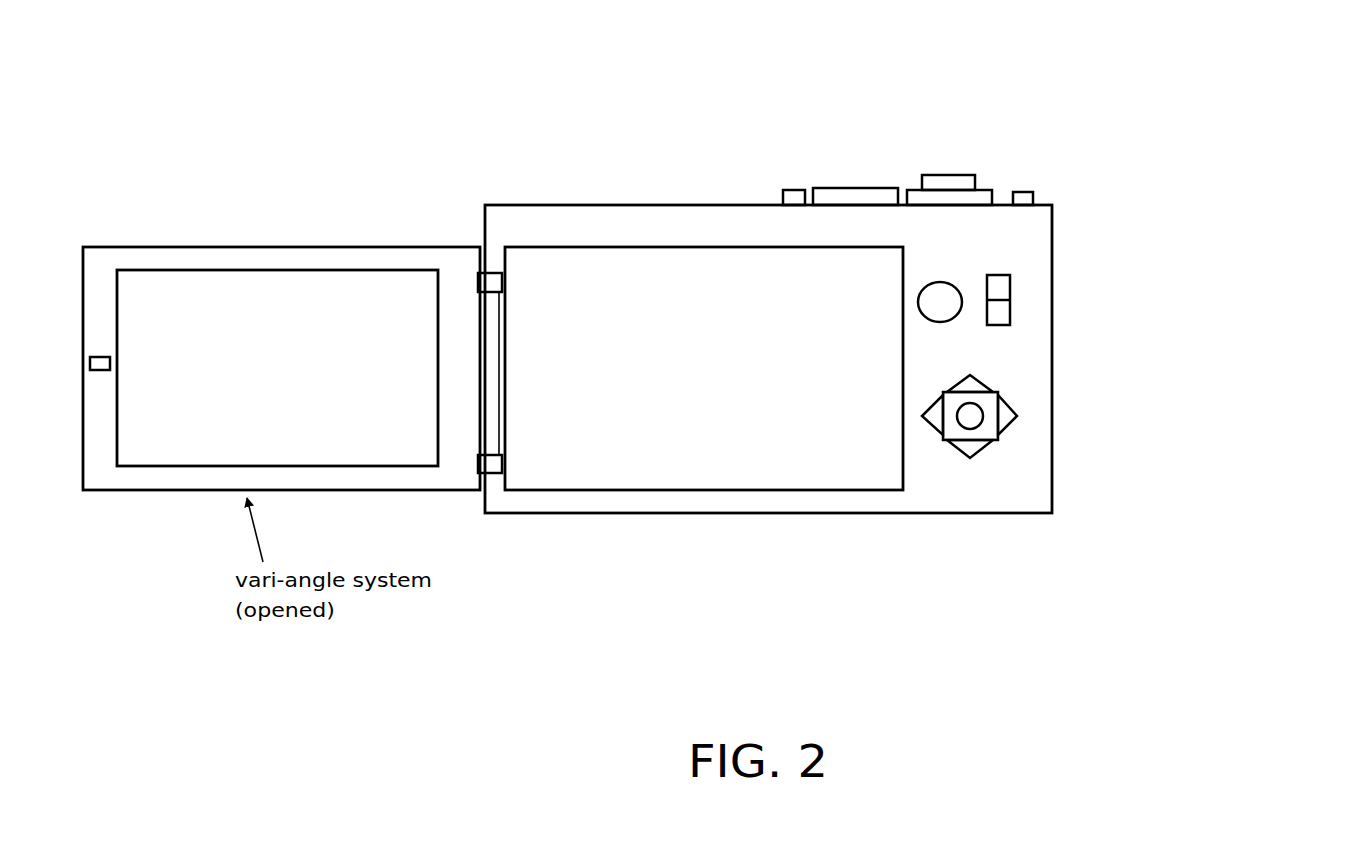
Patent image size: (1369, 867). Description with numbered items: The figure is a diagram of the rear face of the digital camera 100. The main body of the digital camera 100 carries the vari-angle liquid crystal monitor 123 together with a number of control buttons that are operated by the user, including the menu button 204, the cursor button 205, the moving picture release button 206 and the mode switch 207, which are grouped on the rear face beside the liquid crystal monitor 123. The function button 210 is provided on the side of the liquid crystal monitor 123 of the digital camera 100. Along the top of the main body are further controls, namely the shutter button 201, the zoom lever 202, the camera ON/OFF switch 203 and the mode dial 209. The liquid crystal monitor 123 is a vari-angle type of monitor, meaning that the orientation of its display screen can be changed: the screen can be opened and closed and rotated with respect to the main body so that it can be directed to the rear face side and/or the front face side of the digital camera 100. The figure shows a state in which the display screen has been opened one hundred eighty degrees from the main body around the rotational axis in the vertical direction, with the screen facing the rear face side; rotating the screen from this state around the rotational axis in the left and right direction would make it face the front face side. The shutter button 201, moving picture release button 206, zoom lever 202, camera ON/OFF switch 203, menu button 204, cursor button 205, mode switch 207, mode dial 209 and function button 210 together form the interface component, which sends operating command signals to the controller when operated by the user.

The digital camera 100 is at (563, 138).
The liquid crystal monitor 123 is at (387, 428).
The shutter button 201 is at (943, 175).
The zoom lever 202 is at (975, 203).
The camera ON/OFF switch 203 is at (793, 188).
The menu button 204 is at (970, 416).
The cursor button 205 is at (970, 450).
The moving picture release button 206 is at (940, 302).
The mode switch 207 is at (995, 315).
The mode dial 209 is at (850, 188).
The function button 210 is at (1025, 195).